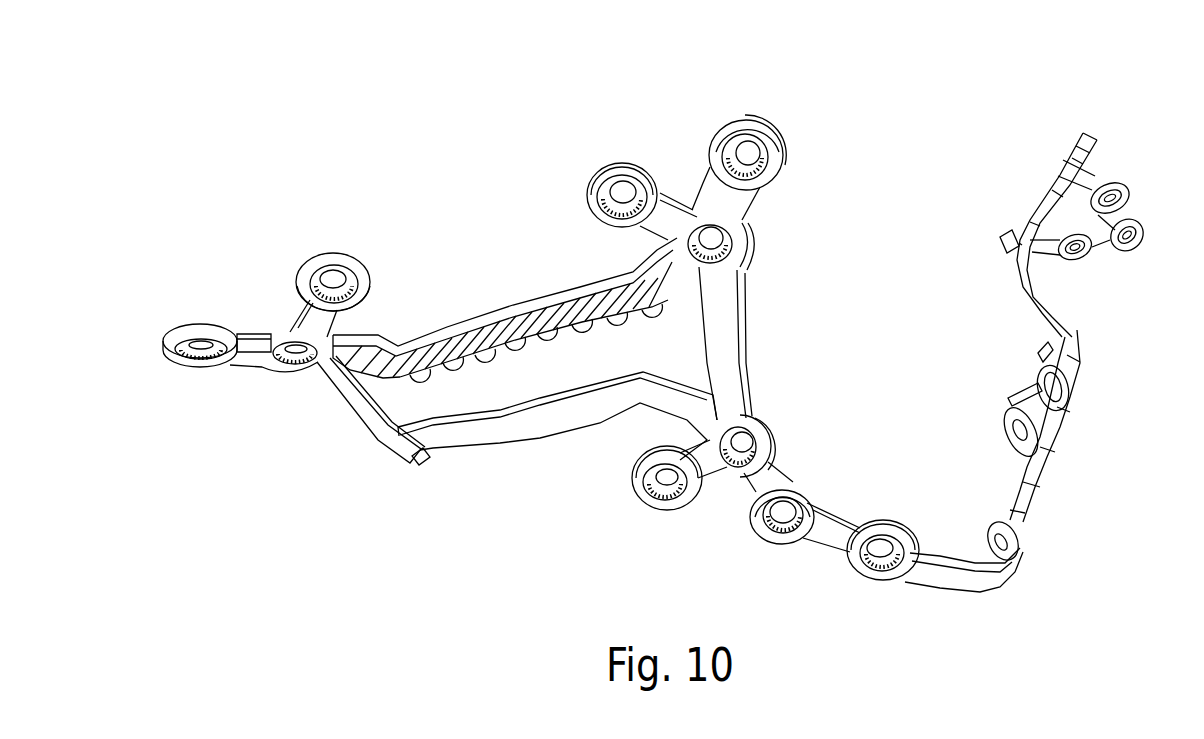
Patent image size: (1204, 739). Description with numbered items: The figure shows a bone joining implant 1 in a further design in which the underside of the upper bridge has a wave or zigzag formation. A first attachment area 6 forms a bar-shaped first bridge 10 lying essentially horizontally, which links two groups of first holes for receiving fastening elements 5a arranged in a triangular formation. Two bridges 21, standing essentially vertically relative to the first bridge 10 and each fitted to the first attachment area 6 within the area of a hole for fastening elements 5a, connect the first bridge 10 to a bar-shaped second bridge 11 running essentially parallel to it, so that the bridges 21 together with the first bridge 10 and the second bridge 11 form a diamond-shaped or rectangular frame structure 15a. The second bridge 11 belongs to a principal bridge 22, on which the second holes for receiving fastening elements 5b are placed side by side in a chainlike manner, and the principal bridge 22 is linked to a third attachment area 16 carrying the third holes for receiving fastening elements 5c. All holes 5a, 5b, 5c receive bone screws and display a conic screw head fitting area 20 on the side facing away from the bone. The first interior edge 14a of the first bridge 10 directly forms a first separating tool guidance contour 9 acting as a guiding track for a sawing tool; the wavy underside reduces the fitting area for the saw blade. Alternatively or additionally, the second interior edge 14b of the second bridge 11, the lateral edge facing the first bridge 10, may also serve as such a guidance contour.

The bone joining implant 1 is at (308, 178).
The first holes for receiving fastening elements 5a is at (200, 343).
The second holes for receiving fastening elements 5b is at (393, 485).
The third holes for receiving fastening elements 5c is at (1066, 138).
The first attachment area 6 is at (480, 215).
The first separating tool guidance contour 9 is at (536, 343).
The first bridge 10 is at (458, 322).
The second bridge 11 is at (474, 438).
The first interior edge 14a is at (440, 372).
The second interior edge 14b is at (528, 402).
The frame structure 15a is at (445, 478).
The third attachment area 16 is at (1106, 142).
The conic screw head fitting area 20 is at (618, 200).
The bridges 21 is at (727, 312).
The principal bridge 22 is at (979, 580).